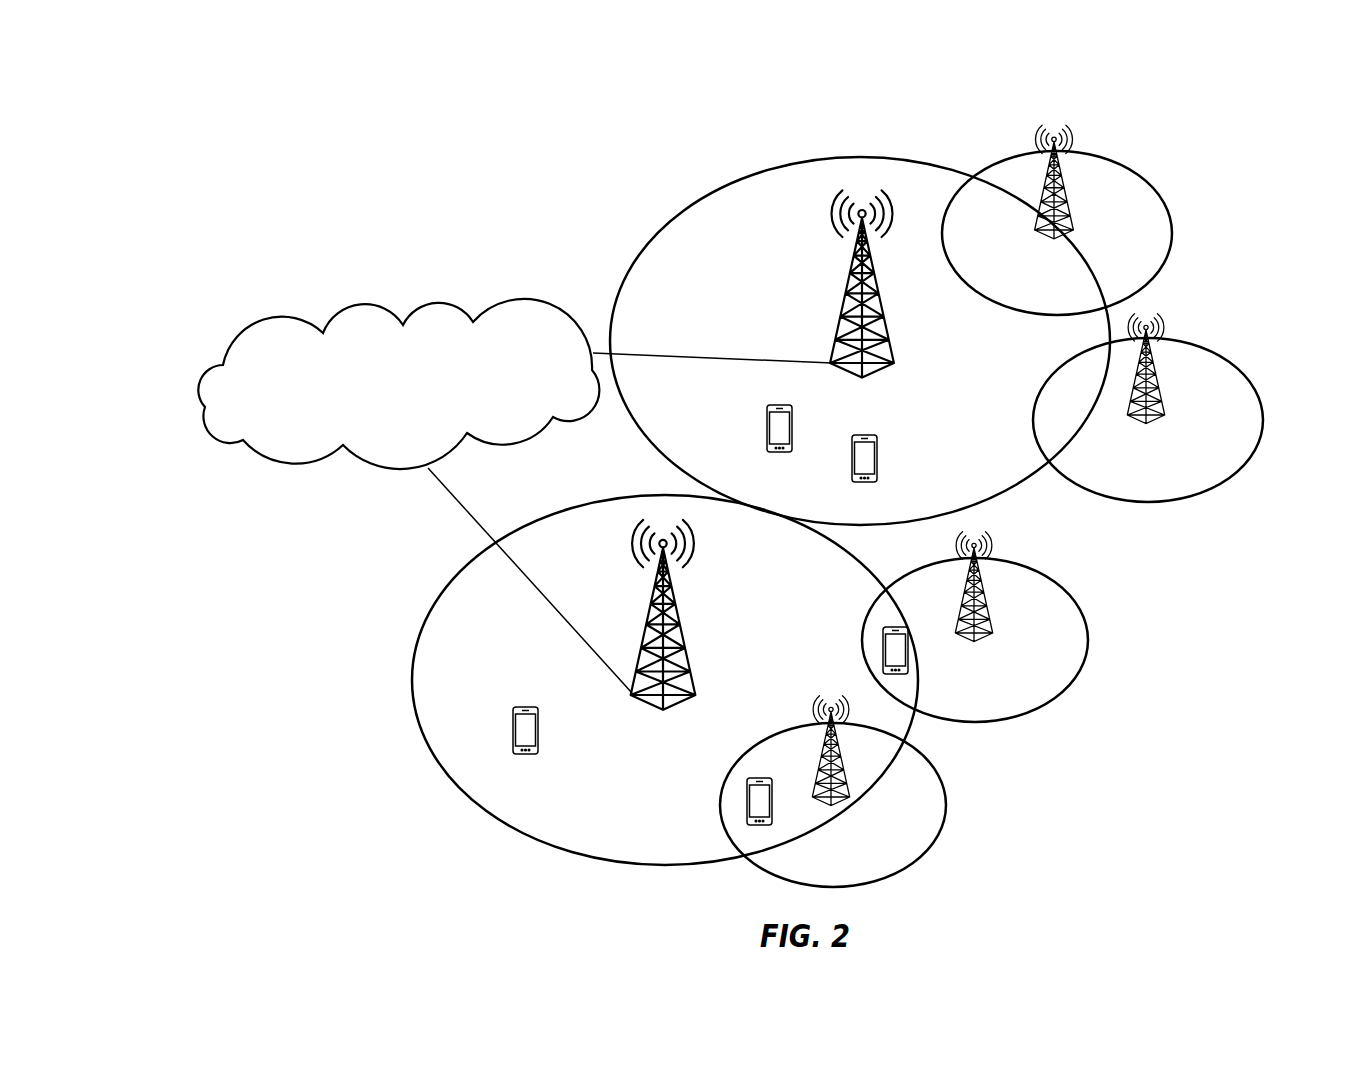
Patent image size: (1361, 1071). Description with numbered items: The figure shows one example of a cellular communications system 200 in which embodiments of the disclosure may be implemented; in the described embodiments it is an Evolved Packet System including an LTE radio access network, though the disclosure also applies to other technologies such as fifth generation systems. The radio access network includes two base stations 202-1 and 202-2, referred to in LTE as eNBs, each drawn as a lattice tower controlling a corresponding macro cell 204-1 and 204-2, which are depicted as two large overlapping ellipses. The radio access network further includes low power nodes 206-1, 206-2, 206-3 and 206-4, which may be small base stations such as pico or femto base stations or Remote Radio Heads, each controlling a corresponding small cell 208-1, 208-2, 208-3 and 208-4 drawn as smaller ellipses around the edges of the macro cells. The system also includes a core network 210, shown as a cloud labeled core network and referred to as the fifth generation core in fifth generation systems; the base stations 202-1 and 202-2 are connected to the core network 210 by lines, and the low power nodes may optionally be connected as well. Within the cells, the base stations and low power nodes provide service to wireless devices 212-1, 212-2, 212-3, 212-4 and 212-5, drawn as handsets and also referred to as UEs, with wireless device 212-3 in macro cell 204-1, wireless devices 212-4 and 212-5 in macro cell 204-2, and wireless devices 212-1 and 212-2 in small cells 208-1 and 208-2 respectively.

The cellular communications system 200 is at (1245, 116).
The core network 210 is at (378, 431).
The macro cell 204-1 is at (525, 838).
The macro cell 204-2 is at (866, 158).
The base station 202-1 is at (686, 638).
The base station 202-2 is at (840, 310).
The low power node 206-1 is at (843, 800).
The low power node 206-2 is at (990, 632).
The low power node 206-3 is at (1156, 415).
The low power node 206-4 is at (1066, 226).
The small cell 208-1 is at (947, 806).
The small cell 208-2 is at (1088, 645).
The small cell 208-3 is at (1262, 422).
The small cell 208-4 is at (1170, 222).
The wireless device 212-1 is at (772, 808).
The wireless device 212-2 is at (909, 650).
The wireless device 212-3 is at (538, 727).
The wireless device 212-4 is at (795, 430).
The wireless device 212-5 is at (878, 460).